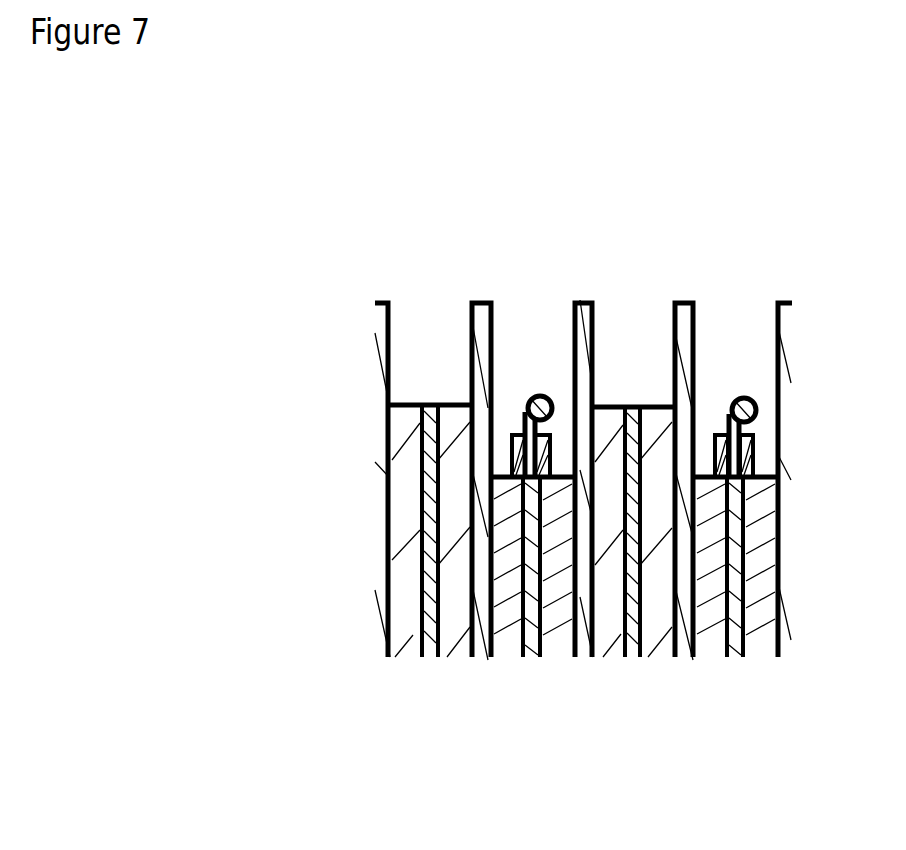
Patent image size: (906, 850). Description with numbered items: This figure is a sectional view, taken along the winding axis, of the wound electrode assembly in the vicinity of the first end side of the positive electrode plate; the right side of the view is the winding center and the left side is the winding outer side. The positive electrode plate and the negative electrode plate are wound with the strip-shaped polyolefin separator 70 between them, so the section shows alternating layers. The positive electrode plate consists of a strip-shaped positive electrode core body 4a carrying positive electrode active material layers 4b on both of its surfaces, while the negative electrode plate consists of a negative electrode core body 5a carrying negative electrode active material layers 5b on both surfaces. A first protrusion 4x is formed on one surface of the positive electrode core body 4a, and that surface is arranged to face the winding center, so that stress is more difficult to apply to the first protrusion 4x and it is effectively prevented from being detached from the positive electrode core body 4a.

The separator 70 is at (478, 300).
The first protrusion 4x is at (536, 396).
The positive electrode core body 4a is at (531, 642).
The positive electrode active material layer 4b is at (516, 645).
The negative electrode core body 5a is at (426, 640).
The negative electrode active material layer 5b is at (405, 640).